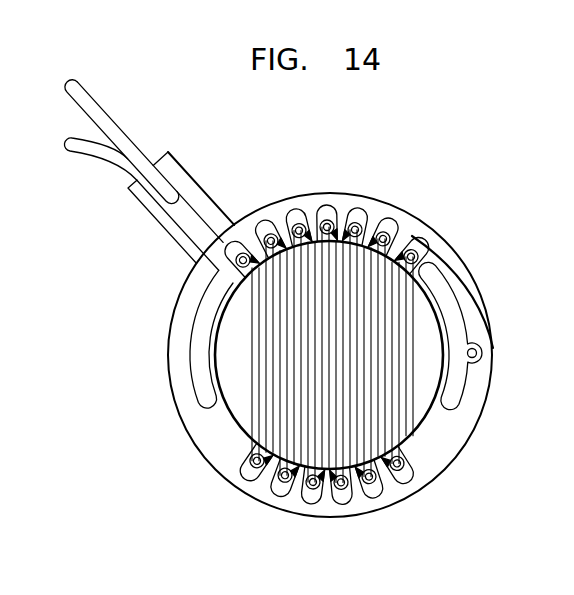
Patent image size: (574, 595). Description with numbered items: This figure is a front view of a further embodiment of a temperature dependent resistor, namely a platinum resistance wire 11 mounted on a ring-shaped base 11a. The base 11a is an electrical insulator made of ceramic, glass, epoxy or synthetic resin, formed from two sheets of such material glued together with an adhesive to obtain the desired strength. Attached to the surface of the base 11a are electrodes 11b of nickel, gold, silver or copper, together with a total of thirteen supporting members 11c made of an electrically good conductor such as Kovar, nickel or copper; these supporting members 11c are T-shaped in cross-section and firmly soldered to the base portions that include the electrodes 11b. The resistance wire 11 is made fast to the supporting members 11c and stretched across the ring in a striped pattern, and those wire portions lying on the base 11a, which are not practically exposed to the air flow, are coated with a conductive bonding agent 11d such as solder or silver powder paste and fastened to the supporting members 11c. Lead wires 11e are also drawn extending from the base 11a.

The platinum resistance wire 11 is at (478, 298).
The ring-shaped base 11a is at (482, 407).
The electrodes 11b is at (203, 216).
The supporting members 11c is at (330, 211).
The conductive bonding agent 11d is at (404, 232).
The lead wires 11e is at (100, 108).